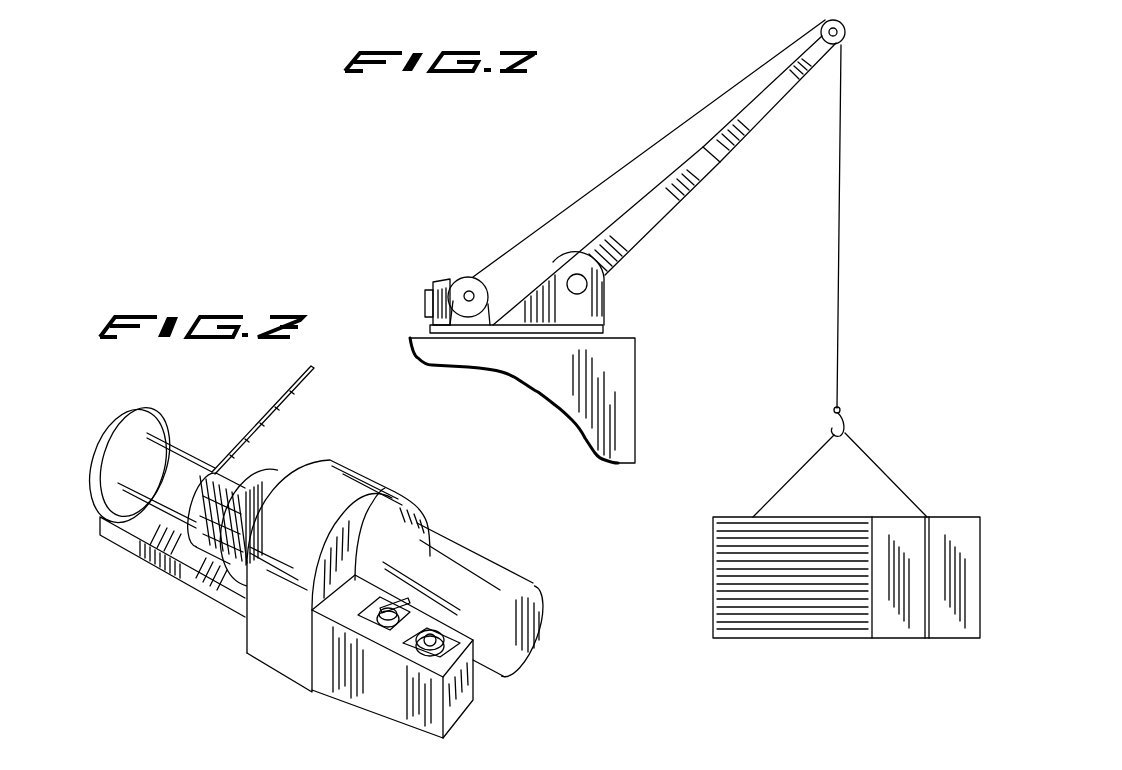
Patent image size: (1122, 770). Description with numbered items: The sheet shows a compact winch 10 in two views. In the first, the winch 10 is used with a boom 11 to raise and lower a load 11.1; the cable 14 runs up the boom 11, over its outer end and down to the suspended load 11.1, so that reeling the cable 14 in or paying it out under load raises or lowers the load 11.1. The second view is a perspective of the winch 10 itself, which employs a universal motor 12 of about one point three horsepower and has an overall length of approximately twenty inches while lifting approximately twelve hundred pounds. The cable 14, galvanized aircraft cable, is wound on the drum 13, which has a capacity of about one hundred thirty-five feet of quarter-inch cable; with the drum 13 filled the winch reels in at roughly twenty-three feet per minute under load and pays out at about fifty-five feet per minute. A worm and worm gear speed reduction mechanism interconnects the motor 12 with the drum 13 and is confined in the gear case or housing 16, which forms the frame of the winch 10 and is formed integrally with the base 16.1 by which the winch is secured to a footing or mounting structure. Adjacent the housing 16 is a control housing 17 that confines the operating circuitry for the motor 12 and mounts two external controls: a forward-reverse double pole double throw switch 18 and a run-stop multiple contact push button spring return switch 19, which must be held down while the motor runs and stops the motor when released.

In FIG. 1, the winch 10 is at (490, 254).
In FIG. 2, the winch 10 is at (240, 664).
In FIG. 1, the boom 11 is at (767, 114).
In FIG. 1, the load 11.1 is at (953, 516).
In FIG. 2, the universal motor 12 is at (492, 578).
In FIG. 2, the drum 13 is at (148, 452).
In FIG. 1, the cable 14 is at (841, 262).
In FIG. 2, the cable 14 is at (262, 422).
In FIG. 2, the gear case or housing 16 is at (333, 513).
In FIG. 2, the base 16.1 is at (223, 583).
In FIG. 2, the control housing 17 is at (423, 707).
In FIG. 2, the forward-reverse switch 18 is at (385, 630).
In FIG. 2, the run-stop push button switch 19 is at (447, 655).